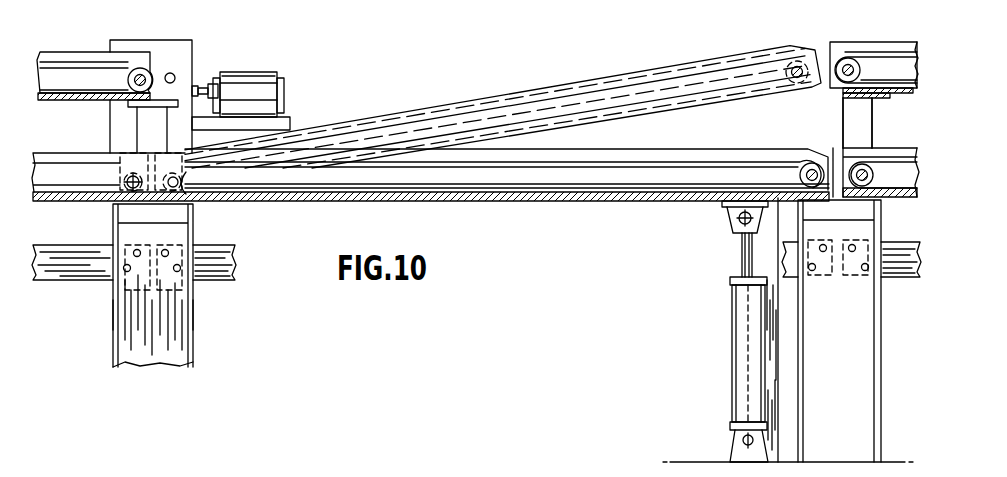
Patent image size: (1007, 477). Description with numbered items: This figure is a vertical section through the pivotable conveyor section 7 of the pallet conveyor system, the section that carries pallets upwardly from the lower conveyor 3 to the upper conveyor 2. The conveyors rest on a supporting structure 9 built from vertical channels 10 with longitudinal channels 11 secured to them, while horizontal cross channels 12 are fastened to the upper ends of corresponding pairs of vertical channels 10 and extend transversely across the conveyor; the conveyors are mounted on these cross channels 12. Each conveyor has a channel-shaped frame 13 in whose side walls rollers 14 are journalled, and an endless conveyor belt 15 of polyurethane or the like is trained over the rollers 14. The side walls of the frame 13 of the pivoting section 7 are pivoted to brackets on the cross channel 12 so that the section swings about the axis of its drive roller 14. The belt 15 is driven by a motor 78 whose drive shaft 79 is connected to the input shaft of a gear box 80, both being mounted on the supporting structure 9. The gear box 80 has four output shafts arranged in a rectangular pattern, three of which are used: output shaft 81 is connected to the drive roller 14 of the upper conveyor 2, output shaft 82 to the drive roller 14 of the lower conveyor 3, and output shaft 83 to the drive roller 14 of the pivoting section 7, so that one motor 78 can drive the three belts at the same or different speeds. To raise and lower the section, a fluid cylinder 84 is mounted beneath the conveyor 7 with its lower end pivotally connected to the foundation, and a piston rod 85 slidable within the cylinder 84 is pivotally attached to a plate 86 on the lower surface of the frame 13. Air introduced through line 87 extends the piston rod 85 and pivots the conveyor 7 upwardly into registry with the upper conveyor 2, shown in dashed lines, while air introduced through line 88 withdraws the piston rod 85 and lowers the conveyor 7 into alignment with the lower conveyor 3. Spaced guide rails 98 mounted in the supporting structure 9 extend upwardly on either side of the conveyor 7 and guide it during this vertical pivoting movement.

The upper conveyor 2 is at (893, 0).
The lower conveyor 3 is at (50, 155).
The pivotable conveyor section 7 is at (508, 202).
The supporting structure 9 is at (196, 294).
The vertical channels 10 is at (175, 338).
The longitudinal channels 11 is at (83, 264).
The horizontal cross channels 12 is at (115, 214).
The channel-shaped frame 13 is at (112, 24).
The rollers 14 is at (818, 160).
The endless conveyor belt 15 is at (44, 56).
The motor 78 is at (263, 80).
The drive shaft 79 is at (201, 83).
The gear box 80 is at (175, 42).
The output shaft 81 is at (141, 74).
The output shaft 82 is at (130, 170).
The output shaft 83 is at (193, 207).
The fluid cylinder 84 is at (735, 341).
The piston rod 85 is at (742, 259).
The plate 86 is at (728, 205).
The line 87 is at (733, 423).
The line 88 is at (730, 283).
The guide rails 98 is at (778, 303).